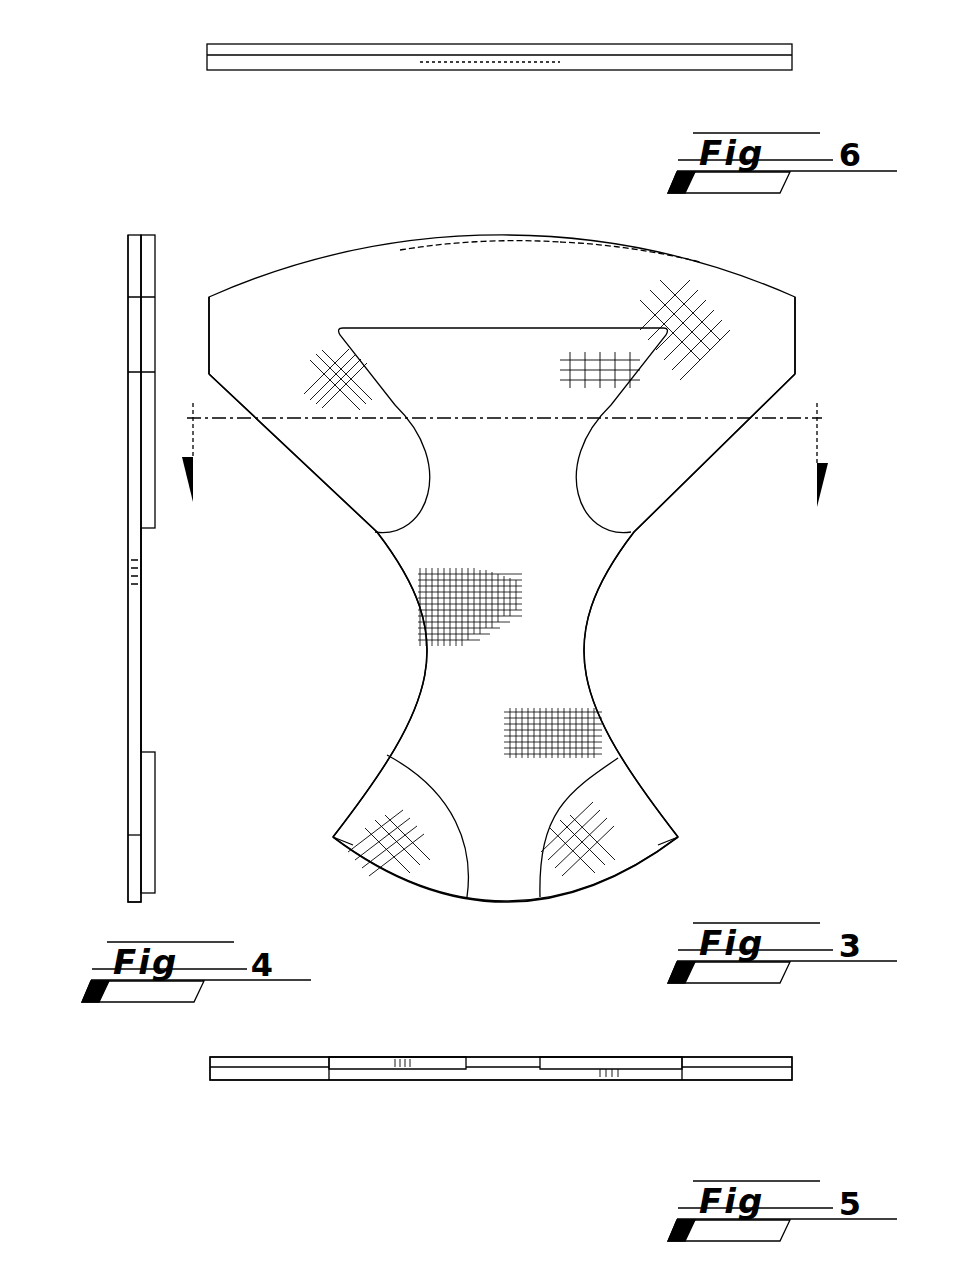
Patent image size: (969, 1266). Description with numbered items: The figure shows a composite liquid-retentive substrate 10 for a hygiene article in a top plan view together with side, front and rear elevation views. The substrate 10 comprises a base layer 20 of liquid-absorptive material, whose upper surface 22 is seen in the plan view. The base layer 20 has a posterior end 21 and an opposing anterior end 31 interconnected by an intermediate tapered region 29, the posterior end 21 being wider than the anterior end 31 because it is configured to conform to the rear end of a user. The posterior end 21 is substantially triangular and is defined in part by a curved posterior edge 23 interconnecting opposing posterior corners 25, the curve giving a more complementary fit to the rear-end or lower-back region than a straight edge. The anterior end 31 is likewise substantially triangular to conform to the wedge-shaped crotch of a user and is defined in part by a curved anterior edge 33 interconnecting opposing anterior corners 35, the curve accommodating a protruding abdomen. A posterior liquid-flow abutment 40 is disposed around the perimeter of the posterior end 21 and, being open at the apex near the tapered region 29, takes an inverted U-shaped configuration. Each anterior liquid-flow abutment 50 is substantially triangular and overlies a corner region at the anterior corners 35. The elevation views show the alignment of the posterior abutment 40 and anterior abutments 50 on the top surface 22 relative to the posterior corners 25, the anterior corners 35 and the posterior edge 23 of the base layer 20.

In FIG. 3, the composite liquid-retentive substrate 10 is at (395, 122).
In FIG. 4, the composite liquid-retentive substrate 10 is at (78, 634).
In FIG. 5, the composite liquid-retentive substrate 10 is at (462, 1128).
In FIG. 6, the base layer 20 is at (197, 62).
In FIG. 3, the base layer 20 is at (590, 598).
In FIG. 4, the base layer 20 is at (126, 228).
In FIG. 5, the base layer 20 is at (805, 1077).
In FIG. 3, the posterior end 21 is at (647, 252).
In FIG. 3, the upper surface 22 is at (528, 531).
In FIG. 4, the upper surface 22 is at (150, 640).
In FIG. 6, the posterior edge 23 is at (490, 62).
In FIG. 3, the posterior edge 23 is at (505, 235).
In FIG. 3, the posterior corners 25 is at (198, 335).
In FIG. 4, the posterior corners 25 is at (118, 340).
In FIG. 3, the intermediate tapered region 29 is at (410, 633).
In FIG. 4, the intermediate tapered region 29 is at (121, 568).
In FIG. 3, the anterior end 31 is at (403, 908).
In FIG. 3, the anterior edge 33 is at (497, 903).
In FIG. 3, the anterior corners 35 is at (322, 840).
In FIG. 4, the anterior corners 35 is at (118, 829).
In FIG. 5, the anterior corners 35 is at (332, 1080).
In FIG. 6, the posterior liquid-flow abutment 40 is at (800, 44).
In FIG. 3, the posterior liquid-flow abutment 40 is at (377, 273).
In FIG. 4, the posterior liquid-flow abutment 40 is at (144, 228).
In FIG. 5, the posterior liquid-flow abutment 40 is at (207, 1068).
In FIG. 3, the anterior liquid-flow abutment 50 is at (385, 793).
In FIG. 4, the anterior liquid-flow abutment 50 is at (156, 904).
In FIG. 5, the anterior liquid-flow abutment 50 is at (370, 1060).